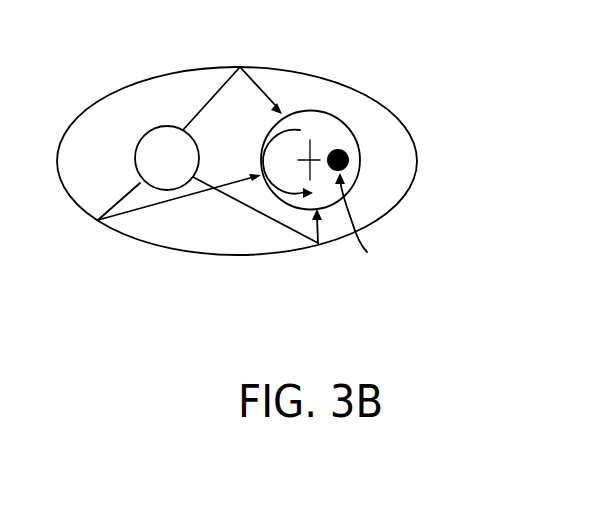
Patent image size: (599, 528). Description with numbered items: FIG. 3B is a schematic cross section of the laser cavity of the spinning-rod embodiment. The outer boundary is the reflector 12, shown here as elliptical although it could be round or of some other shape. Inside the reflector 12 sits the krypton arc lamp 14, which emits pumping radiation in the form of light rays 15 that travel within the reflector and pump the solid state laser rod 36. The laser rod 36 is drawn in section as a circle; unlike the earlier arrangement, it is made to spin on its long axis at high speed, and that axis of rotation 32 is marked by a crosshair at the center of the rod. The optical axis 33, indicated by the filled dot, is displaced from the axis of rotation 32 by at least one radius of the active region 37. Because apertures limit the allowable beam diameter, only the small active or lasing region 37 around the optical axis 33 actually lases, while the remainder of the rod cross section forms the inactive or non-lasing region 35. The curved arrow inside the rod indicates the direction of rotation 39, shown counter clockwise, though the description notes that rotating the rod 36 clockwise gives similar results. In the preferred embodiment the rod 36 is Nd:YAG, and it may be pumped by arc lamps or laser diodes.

The reflector 12 is at (327, 78).
The krypton arc lamp 14 is at (143, 131).
The light rays 15 is at (208, 100).
The axis of rotation 32 is at (308, 143).
The optical axis 33 is at (364, 218).
The inactive or non-lasing region 35 is at (335, 143).
The solid state laser rod 36 is at (349, 160).
The active or lasing region 37 is at (343, 168).
The direction of rotation 39 is at (288, 197).